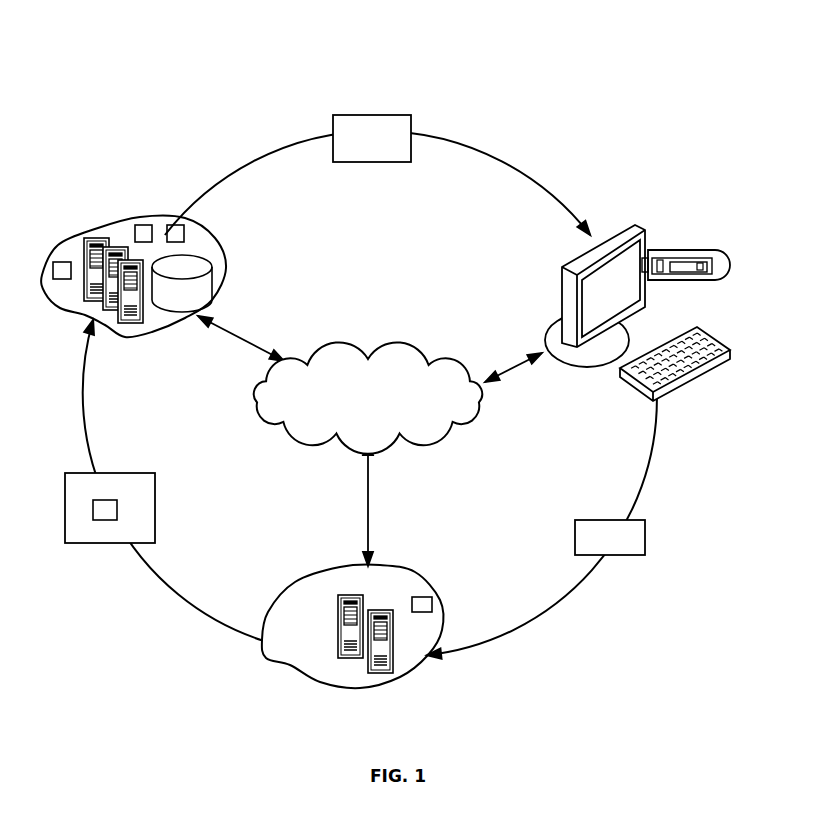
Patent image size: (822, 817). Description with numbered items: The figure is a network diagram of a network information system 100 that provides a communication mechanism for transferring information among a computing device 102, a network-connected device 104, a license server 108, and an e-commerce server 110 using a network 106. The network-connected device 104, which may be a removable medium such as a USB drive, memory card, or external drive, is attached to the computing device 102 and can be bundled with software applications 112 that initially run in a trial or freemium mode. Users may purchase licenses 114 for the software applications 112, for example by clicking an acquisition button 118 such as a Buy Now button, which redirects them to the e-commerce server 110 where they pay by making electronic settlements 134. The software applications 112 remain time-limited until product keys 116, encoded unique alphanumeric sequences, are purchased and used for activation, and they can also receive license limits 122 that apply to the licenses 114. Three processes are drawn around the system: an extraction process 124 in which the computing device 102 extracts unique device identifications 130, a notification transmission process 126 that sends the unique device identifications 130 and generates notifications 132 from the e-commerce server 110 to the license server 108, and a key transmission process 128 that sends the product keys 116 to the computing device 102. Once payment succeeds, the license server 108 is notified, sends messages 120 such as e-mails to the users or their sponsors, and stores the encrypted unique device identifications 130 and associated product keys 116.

The network information system 100 is at (145, 35).
The computing device 102 is at (645, 223).
The network-connected device 104 is at (688, 242).
The network 106 is at (354, 406).
The license server 108 is at (226, 240).
The e-commerce server 110 is at (415, 565).
The software applications 112 is at (680, 270).
The licenses 114 is at (175, 225).
The product keys 116 is at (358, 149).
The acquisition button 118 is at (704, 265).
The messages 120 is at (143, 225).
The license limits 122 is at (62, 262).
The extraction process 124 is at (642, 513).
The notification transmission process 126 is at (163, 472).
The key transmission process 128 is at (333, 107).
The unique device identifications 130 is at (596, 547).
The notifications 132 is at (107, 512).
The electronic settlements 134 is at (433, 604).